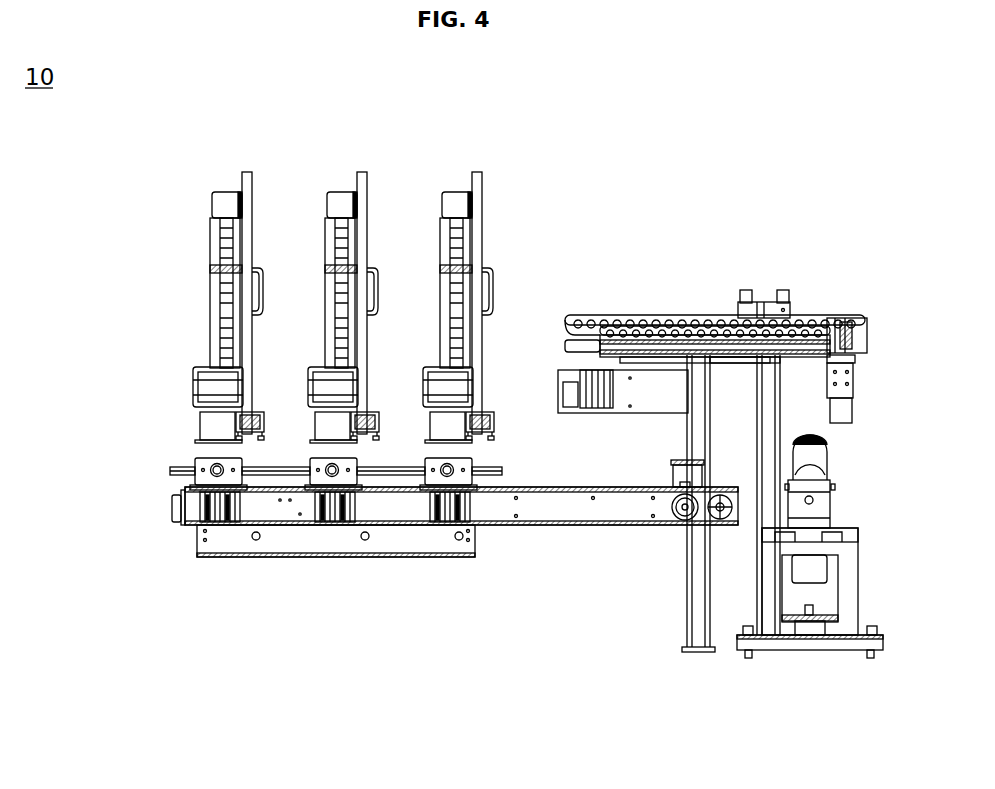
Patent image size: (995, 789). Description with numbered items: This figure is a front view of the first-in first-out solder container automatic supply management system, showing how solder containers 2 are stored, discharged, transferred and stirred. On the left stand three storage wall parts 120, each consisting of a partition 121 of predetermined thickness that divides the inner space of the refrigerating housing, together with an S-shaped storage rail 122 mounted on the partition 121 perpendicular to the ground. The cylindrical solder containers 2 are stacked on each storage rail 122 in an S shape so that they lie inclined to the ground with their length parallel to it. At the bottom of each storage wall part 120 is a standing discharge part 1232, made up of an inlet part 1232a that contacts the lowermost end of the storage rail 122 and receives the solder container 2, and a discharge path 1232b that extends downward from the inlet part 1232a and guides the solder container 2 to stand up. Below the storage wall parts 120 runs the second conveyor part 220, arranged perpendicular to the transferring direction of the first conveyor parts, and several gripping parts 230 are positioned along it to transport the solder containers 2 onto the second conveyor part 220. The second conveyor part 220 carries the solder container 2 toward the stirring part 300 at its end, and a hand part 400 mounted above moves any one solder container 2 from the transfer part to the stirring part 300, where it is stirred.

The solder container 2 is at (227, 198).
The storage wall part 120 is at (258, 181).
The partition 121 is at (247, 250).
The storage rail 122 is at (215, 295).
The standing discharge part 1232 is at (135, 405).
The inlet part 1232a is at (200, 393).
The discharge path 1232b is at (207, 428).
The second conveyor part 220 is at (555, 525).
The gripping part 230 is at (176, 480).
The stirring part 300 is at (878, 448).
The hand part 400 is at (822, 316).